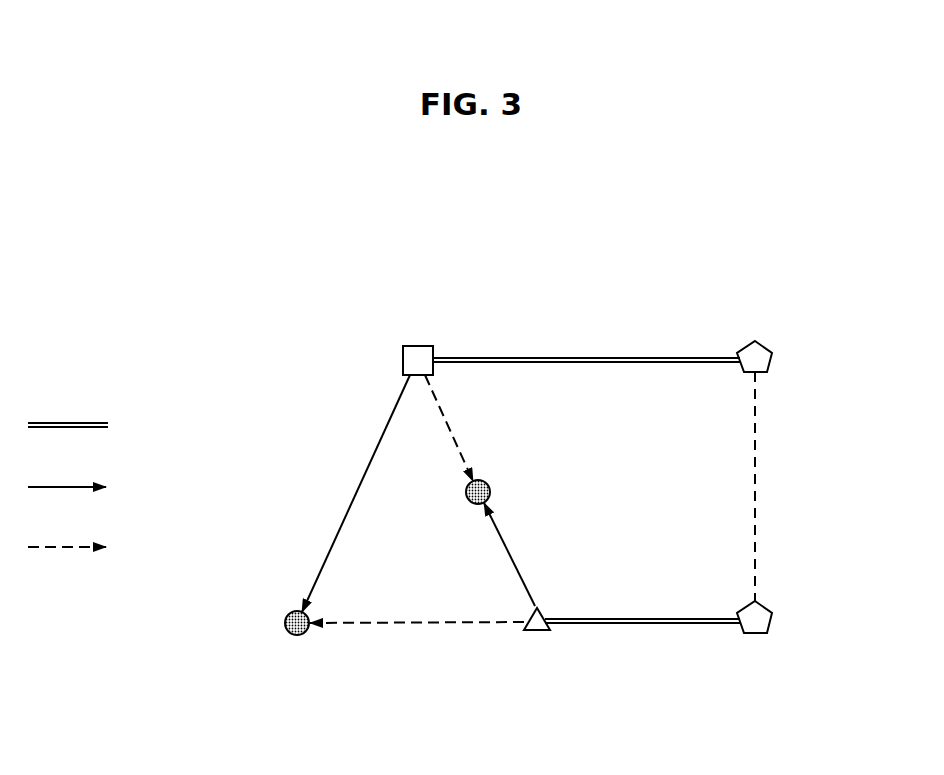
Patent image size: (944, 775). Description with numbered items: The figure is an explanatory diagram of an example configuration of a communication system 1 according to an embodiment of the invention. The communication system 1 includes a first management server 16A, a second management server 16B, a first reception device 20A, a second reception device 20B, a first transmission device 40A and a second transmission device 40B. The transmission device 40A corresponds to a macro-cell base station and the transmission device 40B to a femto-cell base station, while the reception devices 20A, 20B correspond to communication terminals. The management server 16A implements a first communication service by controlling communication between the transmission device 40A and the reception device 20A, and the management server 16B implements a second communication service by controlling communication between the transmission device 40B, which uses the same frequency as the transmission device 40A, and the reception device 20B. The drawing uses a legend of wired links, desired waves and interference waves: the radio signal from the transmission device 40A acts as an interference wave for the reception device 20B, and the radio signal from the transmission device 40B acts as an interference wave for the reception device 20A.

The communication system 1 is at (236, 237).
The transmission device 40A is at (418, 345).
The transmission device 40B is at (537, 632).
The management server 16A is at (772, 357).
The management server 16B is at (772, 617).
The reception device 20A is at (297, 636).
The reception device 20B is at (491, 490).